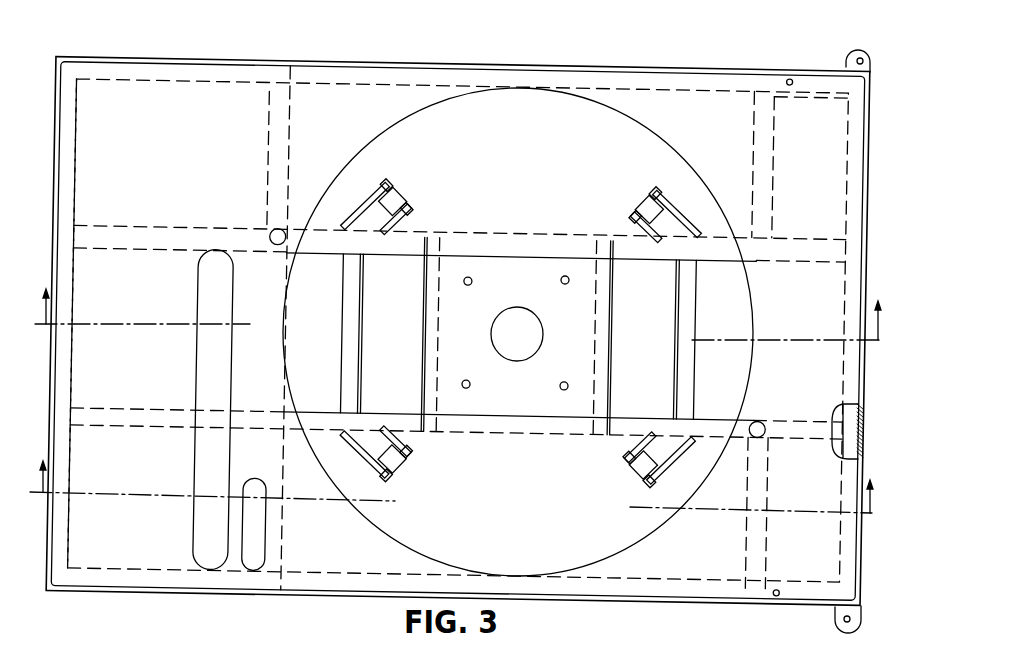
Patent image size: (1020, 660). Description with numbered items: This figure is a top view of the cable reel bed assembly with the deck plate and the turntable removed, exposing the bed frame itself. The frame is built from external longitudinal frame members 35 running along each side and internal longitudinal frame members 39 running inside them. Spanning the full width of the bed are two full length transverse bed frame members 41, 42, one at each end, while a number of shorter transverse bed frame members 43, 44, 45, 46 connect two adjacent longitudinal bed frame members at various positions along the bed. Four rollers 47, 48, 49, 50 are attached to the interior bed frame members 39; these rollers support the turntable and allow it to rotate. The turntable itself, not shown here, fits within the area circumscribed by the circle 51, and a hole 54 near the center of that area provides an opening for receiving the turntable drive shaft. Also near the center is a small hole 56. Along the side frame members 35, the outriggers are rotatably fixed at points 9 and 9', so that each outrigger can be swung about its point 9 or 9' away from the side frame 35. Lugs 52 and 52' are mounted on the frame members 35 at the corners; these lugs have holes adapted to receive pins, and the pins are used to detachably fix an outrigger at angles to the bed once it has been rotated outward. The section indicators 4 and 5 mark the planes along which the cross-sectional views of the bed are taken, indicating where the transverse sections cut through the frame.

The external longitudinal frame member 35 is at (417, 76).
The internal longitudinal frame member 39 is at (337, 255).
The full length transverse bed frame member 41 is at (52, 409).
The full length transverse bed frame member 42 is at (862, 433).
The transverse bed frame member 43 is at (288, 162).
The transverse bed frame member 44 is at (362, 376).
The transverse bed frame member 45 is at (754, 134).
The transverse bed frame member 46 is at (674, 356).
The roller 47 is at (398, 457).
The roller 48 is at (650, 477).
The roller 49 is at (650, 203).
The roller 50 is at (393, 203).
The circle 51 is at (462, 574).
The lug 52 is at (858, 632).
The lug 52' is at (861, 42).
The hole 54 is at (516, 310).
The hole 56 is at (566, 279).
The outrigger pivot point 9 is at (829, 623).
The outrigger pivot point 9' is at (847, 49).
The section line 4- 4 is at (454, 504).
The section line 5- 5 is at (460, 330).